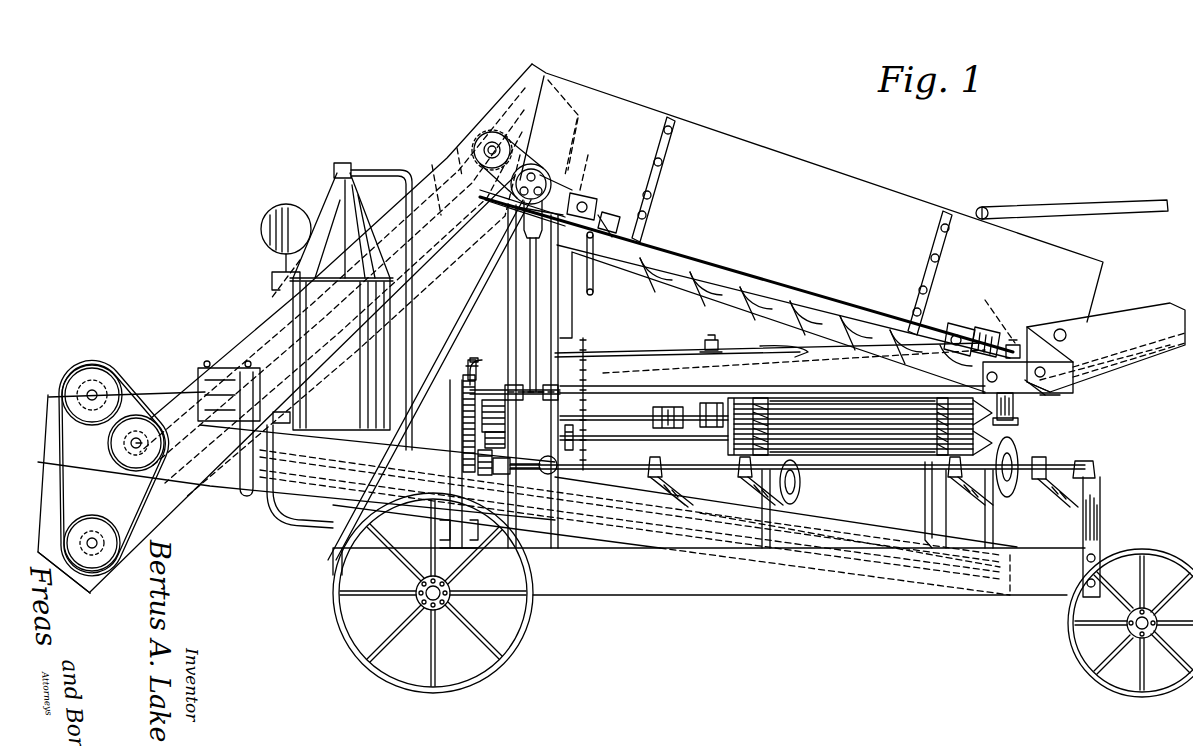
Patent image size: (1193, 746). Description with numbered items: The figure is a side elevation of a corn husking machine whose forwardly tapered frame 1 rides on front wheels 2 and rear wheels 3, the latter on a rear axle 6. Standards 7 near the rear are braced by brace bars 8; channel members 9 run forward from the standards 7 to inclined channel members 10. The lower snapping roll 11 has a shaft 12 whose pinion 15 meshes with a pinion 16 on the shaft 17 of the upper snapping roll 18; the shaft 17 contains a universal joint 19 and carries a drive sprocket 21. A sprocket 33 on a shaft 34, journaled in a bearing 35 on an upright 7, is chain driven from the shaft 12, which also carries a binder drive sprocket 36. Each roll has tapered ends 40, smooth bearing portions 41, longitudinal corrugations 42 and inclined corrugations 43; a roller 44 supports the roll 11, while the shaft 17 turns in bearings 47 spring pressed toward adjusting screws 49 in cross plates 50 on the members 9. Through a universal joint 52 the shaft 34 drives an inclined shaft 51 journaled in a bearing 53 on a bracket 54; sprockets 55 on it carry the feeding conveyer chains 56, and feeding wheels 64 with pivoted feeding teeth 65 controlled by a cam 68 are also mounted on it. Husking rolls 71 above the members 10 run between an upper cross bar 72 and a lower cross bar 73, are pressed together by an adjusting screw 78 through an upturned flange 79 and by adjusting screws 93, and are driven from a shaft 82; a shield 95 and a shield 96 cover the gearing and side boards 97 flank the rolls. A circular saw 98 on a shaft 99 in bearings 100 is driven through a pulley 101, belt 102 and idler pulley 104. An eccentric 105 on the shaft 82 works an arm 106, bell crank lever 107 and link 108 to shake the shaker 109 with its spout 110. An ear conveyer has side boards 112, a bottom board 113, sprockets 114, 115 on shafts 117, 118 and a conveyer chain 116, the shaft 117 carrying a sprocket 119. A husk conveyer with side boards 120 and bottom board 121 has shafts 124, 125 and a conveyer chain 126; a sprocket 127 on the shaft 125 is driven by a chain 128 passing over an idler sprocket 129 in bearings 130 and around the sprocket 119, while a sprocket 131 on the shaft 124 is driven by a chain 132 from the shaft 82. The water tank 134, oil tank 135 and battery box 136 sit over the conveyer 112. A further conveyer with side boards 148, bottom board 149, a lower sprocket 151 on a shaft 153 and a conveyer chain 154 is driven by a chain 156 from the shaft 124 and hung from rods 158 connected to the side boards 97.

The frame 1 is at (722, 586).
The front wheels 2 is at (1070, 630).
The rear wheels 3 is at (528, 625).
The rear axle 6 is at (418, 600).
The standards 7 is at (512, 305).
The brace bars 8 is at (477, 290).
The forwardly disposed channel members 9 is at (770, 368).
The inclined channel members 10 is at (883, 338).
The lower snapping roll 11 is at (897, 508).
The shaft 12 is at (622, 442).
The pinion 15 is at (495, 432).
The pinion 16 is at (500, 410).
The shaft 17 is at (636, 418).
The upper snapping roll 18 is at (828, 410).
The universal joint 19 is at (676, 410).
The sprocket 21 is at (469, 366).
The sprocket 33 is at (478, 455).
The shaft 34 is at (462, 420).
The bearing 35 is at (510, 460).
The sprocket 36 is at (569, 425).
The tapered forward ends 40 is at (983, 412).
The smooth bearing portion 41 is at (760, 398).
The longitudinal corrugations 42 is at (868, 415).
The inclined corrugations 43 is at (766, 400).
The roller 44 is at (932, 475).
The bearings 47 is at (1015, 415).
The adjusting screws 49 is at (710, 340).
The cross plates 50 is at (768, 350).
The shaft 51 is at (638, 466).
The universal joint 52 is at (548, 456).
The bearing 53 is at (1090, 462).
The bracket 54 is at (1100, 515).
The sprockets 55 is at (745, 456).
The conveyer chains 56 is at (690, 488).
The feeding wheels 64 is at (797, 488).
The feeding teeth 65 is at (1016, 455).
The cam 68 is at (798, 476).
The husking rolls 71 is at (808, 272).
The upper cross bar 72 is at (590, 196).
The lower cross bar 73 is at (965, 330).
The adjusting screw 78 is at (612, 210).
The upturned flange 79 is at (612, 214).
The shaft 82 is at (560, 178).
The adjusting screws 93 is at (985, 332).
The metal shield 95 is at (591, 165).
The shield 96 is at (1005, 317).
The side boards 97 is at (842, 190).
The circular saw 98 is at (585, 340).
The shaft 99 is at (533, 398).
The bearings 100 is at (528, 385).
The pulley 101 is at (456, 385).
The belt 102 is at (462, 351).
The idler pulley 104 is at (445, 523).
The eccentric 105 is at (577, 142).
The arm 106 is at (530, 283).
The bell crank lever 107 is at (541, 380).
The link 108 is at (794, 361).
The shaker 109 is at (772, 322).
The spout 110 is at (498, 352).
The side boards 112 is at (230, 482).
The bottom board 113 is at (680, 520).
The sprocket 114 is at (147, 418).
The sprocket 115 is at (1008, 565).
The conveyer chain 116 is at (312, 487).
The shaft 117 is at (147, 437).
The shaft 118 is at (1003, 583).
The sprocket 119 is at (136, 430).
The side boards 120 is at (274, 292).
The bottom board 121 is at (447, 163).
The shaft 124 is at (494, 132).
The shaft 125 is at (98, 560).
The conveyer chain 126 is at (327, 328).
The sprocket 127 is at (76, 580).
The chain 128 is at (65, 483).
The idler sprocket 129 is at (100, 372).
The bearings 130 is at (90, 378).
The sprocket 131 is at (485, 138).
The chain 132 is at (527, 163).
The water tank 134 is at (351, 306).
The oil tank 135 is at (292, 210).
The battery box 136 is at (222, 370).
The side boards 148 is at (1128, 318).
The bottom board 149 is at (1142, 350).
The sprocket 151 is at (1058, 393).
The shaft 153 is at (1047, 398).
The conveyer chain 154 is at (1104, 358).
The chain 156 is at (742, 242).
The rods 158 is at (1120, 206).